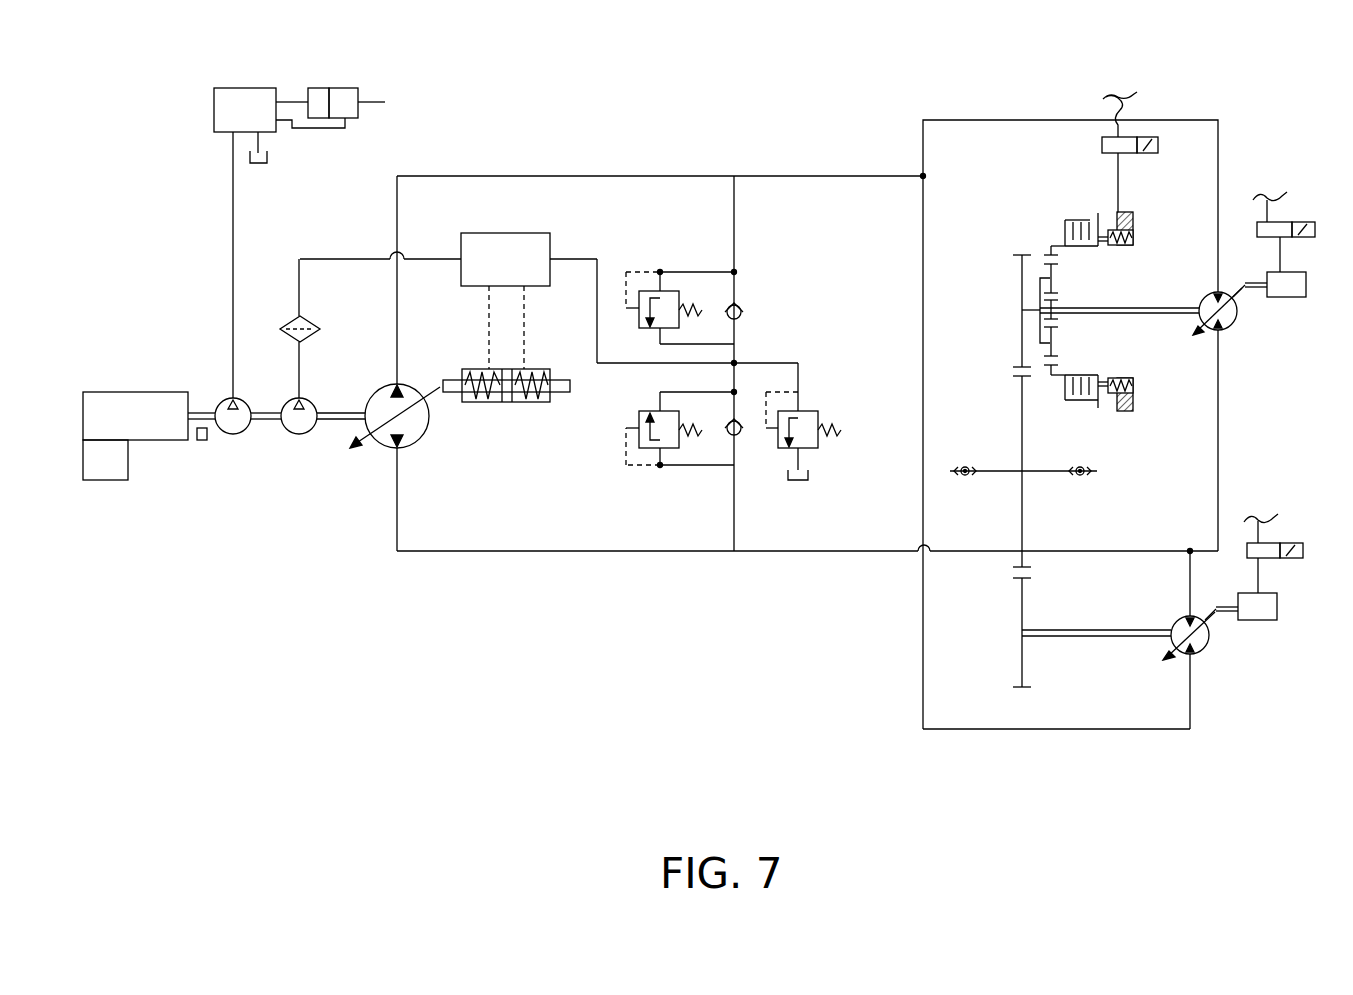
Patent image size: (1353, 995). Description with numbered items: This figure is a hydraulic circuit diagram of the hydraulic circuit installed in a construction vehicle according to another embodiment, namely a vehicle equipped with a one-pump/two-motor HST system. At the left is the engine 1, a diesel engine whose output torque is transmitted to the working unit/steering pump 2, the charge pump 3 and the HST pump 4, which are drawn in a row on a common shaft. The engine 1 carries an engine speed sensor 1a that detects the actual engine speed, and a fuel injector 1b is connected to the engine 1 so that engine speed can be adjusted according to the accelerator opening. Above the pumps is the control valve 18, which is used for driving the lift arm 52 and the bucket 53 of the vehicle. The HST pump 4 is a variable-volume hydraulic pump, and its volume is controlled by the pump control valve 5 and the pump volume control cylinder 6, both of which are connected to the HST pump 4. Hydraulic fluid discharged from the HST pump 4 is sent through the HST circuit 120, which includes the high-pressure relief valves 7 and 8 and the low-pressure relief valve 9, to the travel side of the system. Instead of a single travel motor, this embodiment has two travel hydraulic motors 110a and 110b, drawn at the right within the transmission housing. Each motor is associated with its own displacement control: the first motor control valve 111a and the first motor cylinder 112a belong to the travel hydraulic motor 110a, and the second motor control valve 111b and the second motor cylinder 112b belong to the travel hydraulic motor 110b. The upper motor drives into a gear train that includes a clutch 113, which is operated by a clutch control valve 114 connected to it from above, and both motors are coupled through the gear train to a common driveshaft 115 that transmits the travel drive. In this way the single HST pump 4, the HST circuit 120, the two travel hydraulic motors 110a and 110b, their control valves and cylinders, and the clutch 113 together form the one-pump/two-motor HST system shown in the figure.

The engine 1 is at (165, 392).
The engine speed sensor 1a is at (203, 442).
The fuel injector 1b is at (126, 470).
The working unit/steering pump 2 is at (246, 396).
The charge pump 3 is at (312, 396).
The HST pump 4 is at (404, 394).
The pump control valve 5 is at (530, 233).
The pump volume control cylinder 6 is at (517, 402).
The high-pressure relief valve 7 is at (676, 262).
The high-pressure relief valve 8 is at (672, 470).
The low-pressure relief valve 9 is at (810, 394).
The control valve 18 is at (214, 118).
The lift arm 52 is at (346, 78).
The bucket 53 is at (334, 88).
The travel hydraulic motor 110a is at (1205, 296).
The travel hydraulic motor 110b is at (1178, 621).
The first motor control valve 111a is at (1285, 224).
The second motor control valve 111b is at (1277, 545).
The first motor cylinder 112a is at (1293, 297).
The second motor cylinder 112b is at (1262, 620).
The clutch 113 is at (1072, 218).
The clutch control valve 114 is at (1102, 145).
The driveshaft 115 is at (1000, 471).
The HST circuit 120 is at (793, 170).